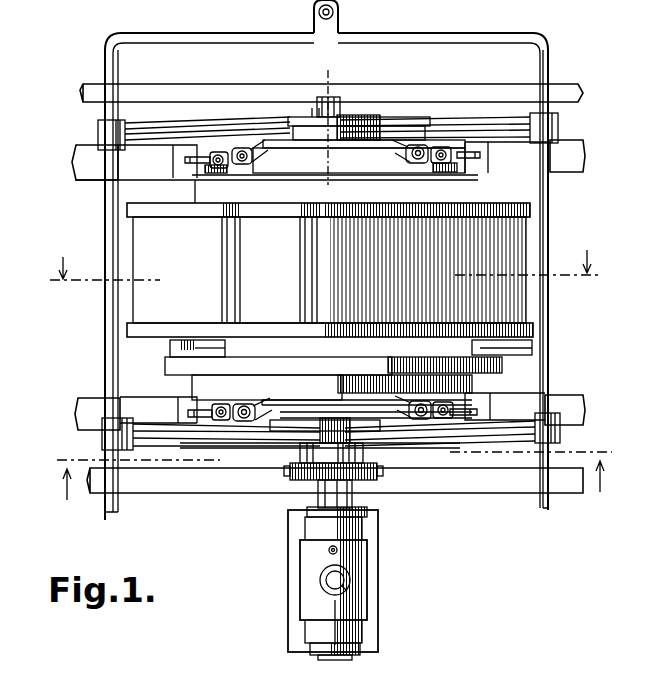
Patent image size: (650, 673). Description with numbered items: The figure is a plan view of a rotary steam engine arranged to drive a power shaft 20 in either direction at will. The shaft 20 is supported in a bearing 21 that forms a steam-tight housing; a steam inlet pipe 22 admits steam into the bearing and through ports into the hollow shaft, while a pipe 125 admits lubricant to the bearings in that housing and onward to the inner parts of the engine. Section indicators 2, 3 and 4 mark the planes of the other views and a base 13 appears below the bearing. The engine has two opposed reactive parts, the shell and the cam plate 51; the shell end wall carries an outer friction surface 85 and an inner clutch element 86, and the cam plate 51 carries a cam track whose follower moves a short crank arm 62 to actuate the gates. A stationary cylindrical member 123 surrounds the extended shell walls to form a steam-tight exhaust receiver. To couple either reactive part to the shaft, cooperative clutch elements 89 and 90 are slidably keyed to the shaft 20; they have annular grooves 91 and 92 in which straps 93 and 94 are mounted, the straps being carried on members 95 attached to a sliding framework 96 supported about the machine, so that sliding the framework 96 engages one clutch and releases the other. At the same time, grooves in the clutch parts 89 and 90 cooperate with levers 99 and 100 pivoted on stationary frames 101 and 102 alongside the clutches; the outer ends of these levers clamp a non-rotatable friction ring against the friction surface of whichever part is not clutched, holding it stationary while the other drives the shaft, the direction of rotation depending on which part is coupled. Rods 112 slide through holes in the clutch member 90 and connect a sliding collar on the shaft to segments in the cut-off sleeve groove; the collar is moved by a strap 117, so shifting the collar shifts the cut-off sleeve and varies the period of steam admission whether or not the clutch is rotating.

The section line 2- 2 is at (329, 473).
The section line 3- 3 is at (325, 117).
The section line 4- 4 is at (322, 270).
The base collar 13 is at (335, 658).
The power shaft 20 is at (343, 108).
The bearing 21 is at (355, 556).
The steam inlet pipe 22 is at (352, 583).
The cam plate 51 is at (513, 348).
The crank arm 62 is at (200, 347).
The outer friction surface 85 is at (303, 175).
The inner clutch element 86 is at (256, 401).
The clutch element 89 is at (310, 117).
The clutch element 90 is at (294, 441).
The annular groove 91 is at (297, 147).
The annular groove 92 is at (294, 416).
The strap 93 is at (337, 132).
The strap 94 is at (325, 430).
The members 95 is at (522, 120).
The sliding framework 96 is at (110, 315).
The lever 99 is at (245, 152).
The lever 100 is at (257, 413).
The stationary frame 101 is at (190, 403).
The stationary frame 102 is at (185, 152).
The rods 112 is at (362, 452).
The strap 117 is at (385, 471).
The stationary cylindrical member 123 is at (330, 270).
The lubricant pipe 125 is at (325, 553).